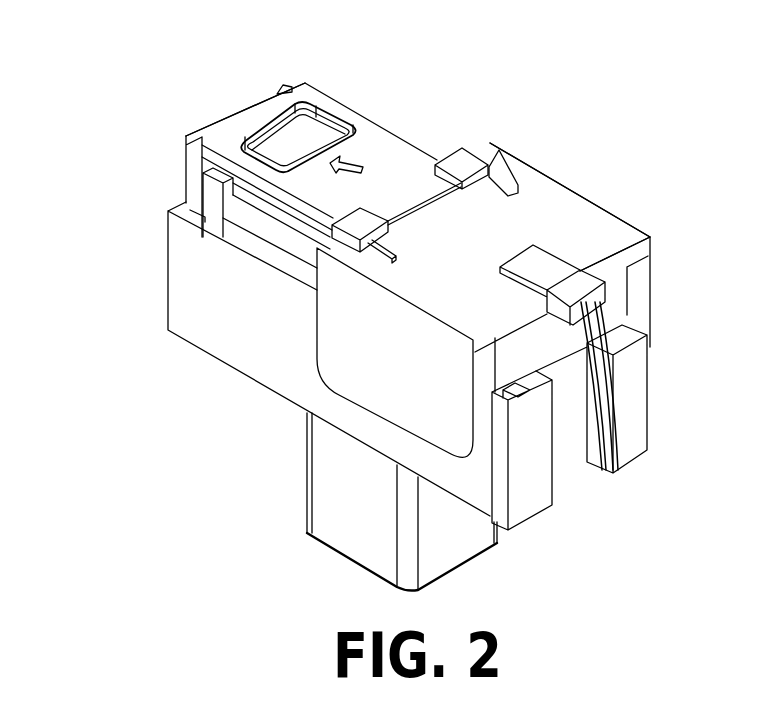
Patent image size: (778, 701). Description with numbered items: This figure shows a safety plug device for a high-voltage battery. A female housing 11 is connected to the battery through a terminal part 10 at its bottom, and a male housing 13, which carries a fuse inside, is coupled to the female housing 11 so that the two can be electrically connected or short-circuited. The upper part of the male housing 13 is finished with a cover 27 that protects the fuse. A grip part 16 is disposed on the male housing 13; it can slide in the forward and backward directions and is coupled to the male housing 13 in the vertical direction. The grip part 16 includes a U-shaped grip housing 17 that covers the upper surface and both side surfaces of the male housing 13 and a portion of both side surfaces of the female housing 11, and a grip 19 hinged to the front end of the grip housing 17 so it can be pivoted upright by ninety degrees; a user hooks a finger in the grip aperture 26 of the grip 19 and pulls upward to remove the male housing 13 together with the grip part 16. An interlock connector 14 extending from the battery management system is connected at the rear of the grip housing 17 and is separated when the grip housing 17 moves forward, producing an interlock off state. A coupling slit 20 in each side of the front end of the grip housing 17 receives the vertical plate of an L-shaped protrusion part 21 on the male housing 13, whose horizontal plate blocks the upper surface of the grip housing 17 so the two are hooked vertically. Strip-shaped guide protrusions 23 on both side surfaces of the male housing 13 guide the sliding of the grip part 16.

The terminal part 10 is at (333, 482).
The female housing 11 is at (173, 298).
The male housing 13 is at (192, 185).
The interlock connector 14 is at (590, 290).
The grip part 16 is at (548, 161).
The grip housing 17 is at (590, 217).
The grip 19 is at (375, 145).
The coupling slit 20 is at (499, 181).
The protrusion part 21 is at (465, 147).
The guide protrusion 23 is at (275, 242).
The grip aperture 26 is at (328, 123).
The cover 27 is at (237, 113).